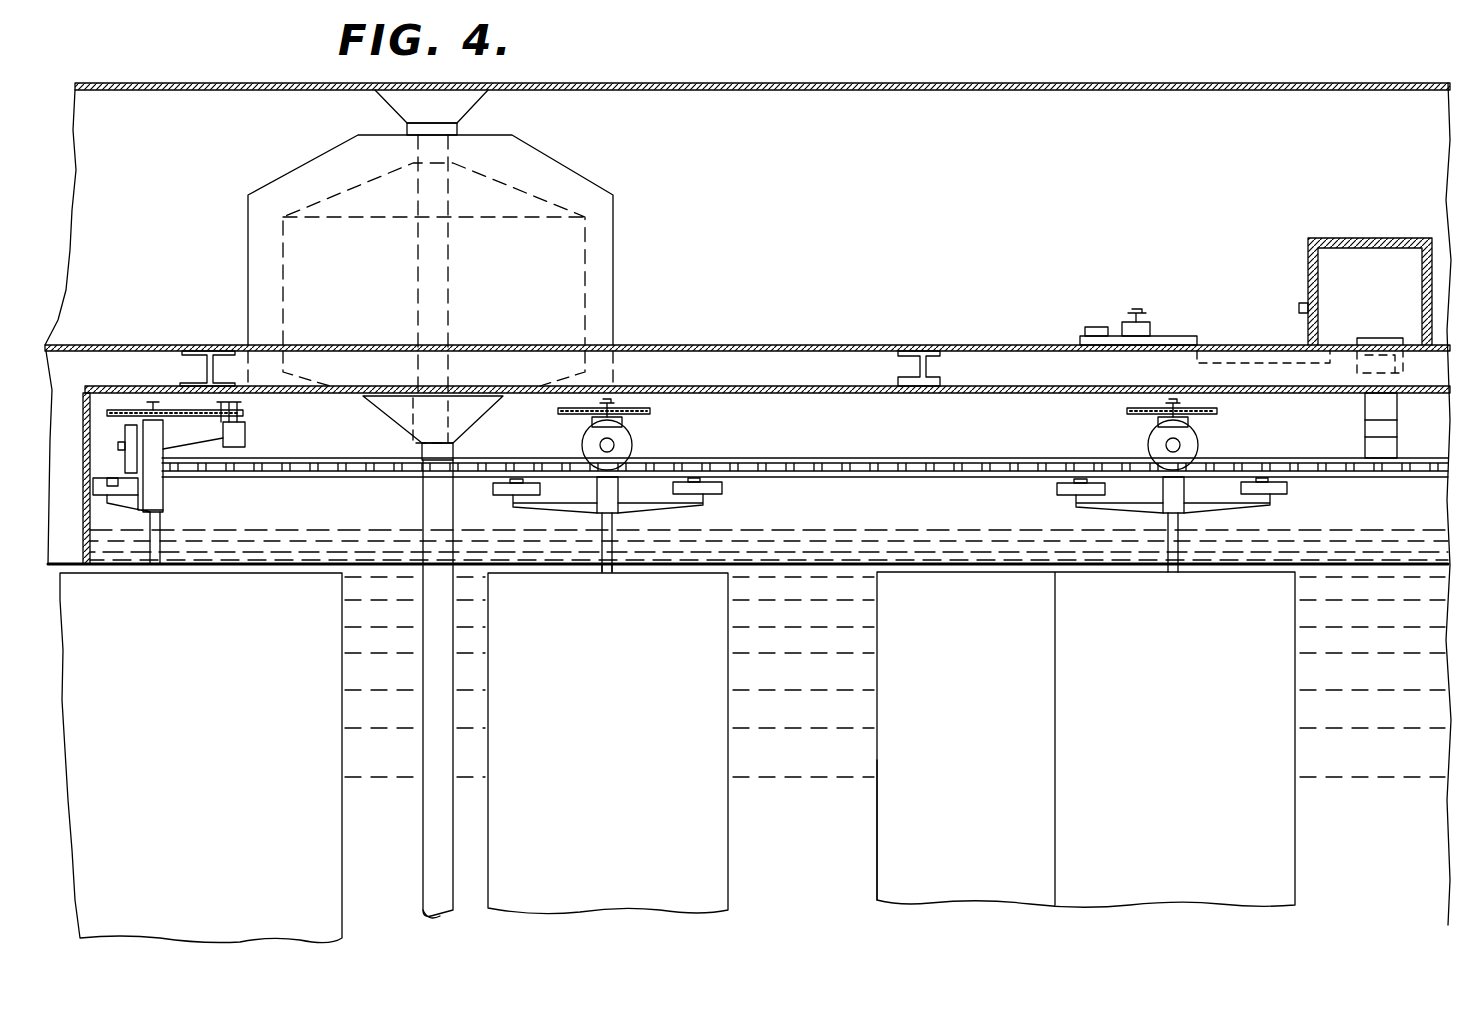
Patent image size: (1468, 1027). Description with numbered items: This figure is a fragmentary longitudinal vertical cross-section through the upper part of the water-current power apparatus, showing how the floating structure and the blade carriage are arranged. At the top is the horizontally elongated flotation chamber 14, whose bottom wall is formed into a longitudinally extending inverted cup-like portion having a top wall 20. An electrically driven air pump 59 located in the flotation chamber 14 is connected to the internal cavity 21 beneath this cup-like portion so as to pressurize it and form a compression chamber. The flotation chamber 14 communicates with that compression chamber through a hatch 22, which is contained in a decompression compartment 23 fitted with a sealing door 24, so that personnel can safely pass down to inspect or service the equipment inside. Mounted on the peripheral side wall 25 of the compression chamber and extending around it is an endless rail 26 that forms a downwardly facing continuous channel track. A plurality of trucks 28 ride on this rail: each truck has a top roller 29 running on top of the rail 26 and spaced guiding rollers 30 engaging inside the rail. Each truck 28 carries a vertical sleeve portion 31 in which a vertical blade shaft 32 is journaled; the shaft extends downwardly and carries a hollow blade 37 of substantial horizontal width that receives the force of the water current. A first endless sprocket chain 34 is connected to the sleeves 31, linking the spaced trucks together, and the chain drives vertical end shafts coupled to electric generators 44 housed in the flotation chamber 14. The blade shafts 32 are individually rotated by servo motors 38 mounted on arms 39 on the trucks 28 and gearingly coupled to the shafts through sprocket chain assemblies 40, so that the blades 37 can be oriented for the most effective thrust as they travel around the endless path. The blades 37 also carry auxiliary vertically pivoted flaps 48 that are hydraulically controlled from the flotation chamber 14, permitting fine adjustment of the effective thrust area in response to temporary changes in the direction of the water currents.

The flotation chamber 14 is at (957, 83).
The top wall 20 is at (820, 386).
The internal cavity 21 is at (1315, 440).
The hatch 22 is at (1370, 338).
The decompression compartment 23 is at (1372, 238).
The sealing door 24 is at (1302, 300).
The peripheral side wall 25 is at (85, 452).
The endless rail 26 is at (106, 466).
The truck 28 is at (615, 520).
The top roller 29 is at (125, 442).
The guiding roller 30 is at (100, 495).
The vertical sleeve portion 31 is at (165, 505).
The vertical blade shaft 32 is at (608, 575).
The first endless sprocket chain 34 is at (781, 458).
The hollow blade 37 is at (715, 684).
The servo motor 38 is at (246, 438).
The arm 39 is at (175, 448).
The sprocket chain assembly 40 is at (168, 410).
The electric generator 44 is at (615, 242).
The auxiliary vertically pivoted flap 48 is at (888, 805).
The electrically driven air pump 59 is at (1152, 328).